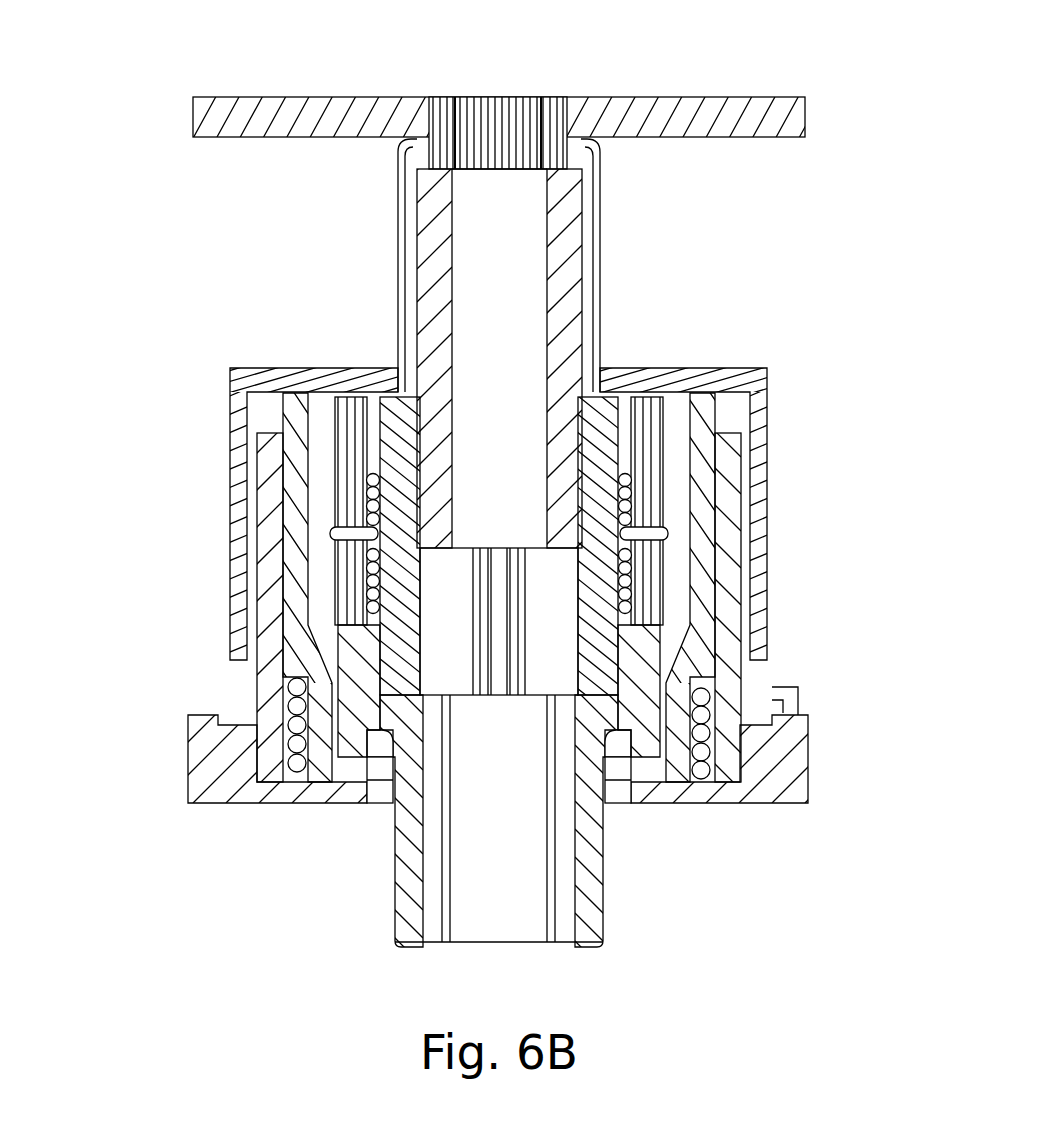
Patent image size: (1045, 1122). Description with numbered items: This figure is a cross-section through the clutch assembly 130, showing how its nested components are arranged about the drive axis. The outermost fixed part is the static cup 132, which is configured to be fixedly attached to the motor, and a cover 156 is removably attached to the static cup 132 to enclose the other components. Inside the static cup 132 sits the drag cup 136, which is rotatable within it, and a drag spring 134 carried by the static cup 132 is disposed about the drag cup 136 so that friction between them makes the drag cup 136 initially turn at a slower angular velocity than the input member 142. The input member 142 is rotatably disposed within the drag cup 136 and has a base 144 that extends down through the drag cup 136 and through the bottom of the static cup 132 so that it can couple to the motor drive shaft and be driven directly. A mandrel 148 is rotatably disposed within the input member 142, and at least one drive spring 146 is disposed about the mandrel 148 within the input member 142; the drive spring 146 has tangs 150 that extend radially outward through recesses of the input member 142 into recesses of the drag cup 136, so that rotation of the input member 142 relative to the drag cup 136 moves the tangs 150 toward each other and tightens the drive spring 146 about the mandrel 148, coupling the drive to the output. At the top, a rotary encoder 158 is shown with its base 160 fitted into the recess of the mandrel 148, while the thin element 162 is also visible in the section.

The clutch assembly 130 is at (103, 154).
The static cup 132 is at (760, 772).
The drag spring 134 is at (297, 765).
The drag cup 136 is at (300, 640).
The input member 142 is at (640, 652).
The base 144 is at (590, 862).
The drive spring 146 is at (628, 485).
The mandrel 148 is at (400, 415).
The tang 150 is at (362, 536).
The cover 156 is at (237, 410).
The rotary encoder 158 is at (306, 97).
The base of the rotary encoder 160 is at (432, 218).
The thin sleeve 162 is at (598, 358).